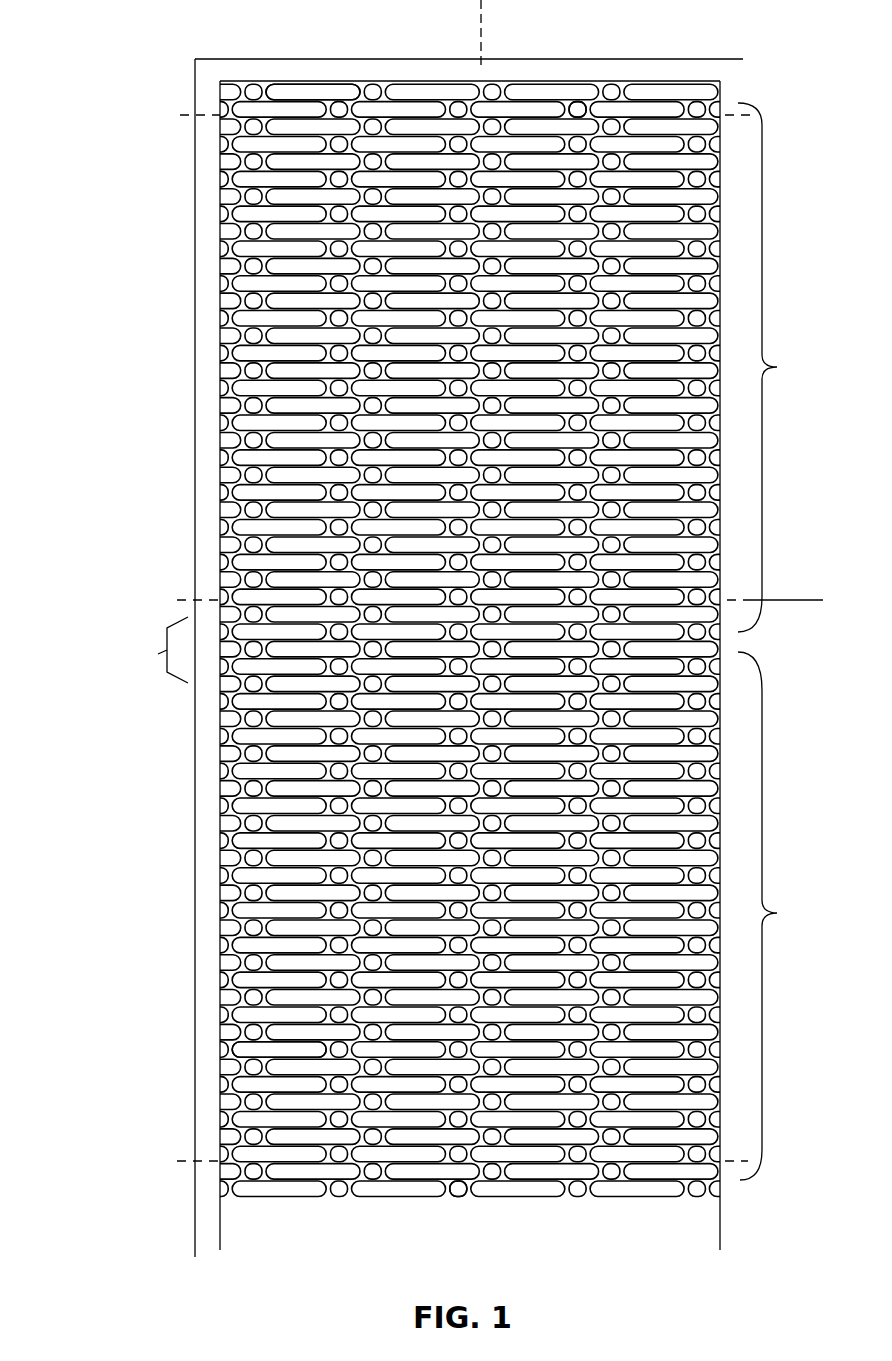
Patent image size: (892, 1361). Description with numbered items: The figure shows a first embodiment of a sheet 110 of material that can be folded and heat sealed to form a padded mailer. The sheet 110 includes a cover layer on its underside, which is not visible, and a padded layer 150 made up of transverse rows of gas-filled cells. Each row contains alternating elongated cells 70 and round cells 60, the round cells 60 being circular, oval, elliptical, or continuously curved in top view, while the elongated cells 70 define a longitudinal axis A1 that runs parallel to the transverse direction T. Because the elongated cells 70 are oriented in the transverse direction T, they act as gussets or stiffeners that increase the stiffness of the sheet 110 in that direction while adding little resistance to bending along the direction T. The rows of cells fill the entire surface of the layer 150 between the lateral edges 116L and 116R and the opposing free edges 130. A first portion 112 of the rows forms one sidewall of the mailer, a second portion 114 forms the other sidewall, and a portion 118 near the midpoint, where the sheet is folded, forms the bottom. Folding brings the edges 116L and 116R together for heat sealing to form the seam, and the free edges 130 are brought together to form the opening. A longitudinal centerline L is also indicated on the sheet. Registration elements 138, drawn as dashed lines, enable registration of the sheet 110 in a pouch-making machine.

The sheet 110 is at (818, 36).
The padded layer 150 is at (343, 92).
The free edges 130 is at (580, 105).
The registration elements 138 is at (208, 122).
The longitudinal axis A1 is at (718, 232).
The first portion 112 is at (784, 367).
The elongated cells 70 is at (247, 390).
The bottom portion 118 is at (166, 651).
The transverse direction T is at (510, 594).
The second portion 114 is at (784, 916).
The left edge 116L is at (228, 873).
The round cells 60 is at (240, 1045).
The right edge 116R is at (724, 1118).
The longitudinal axis L is at (492, 34).